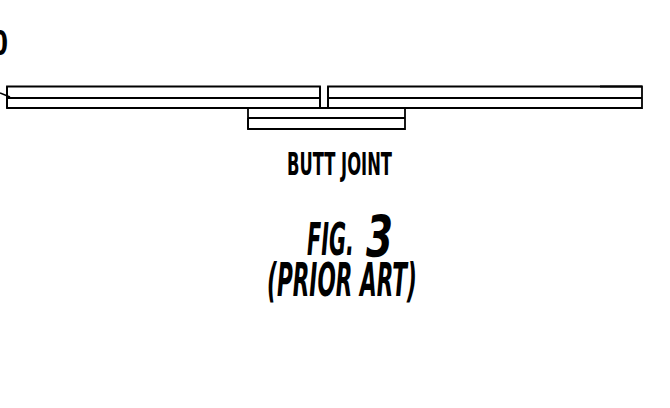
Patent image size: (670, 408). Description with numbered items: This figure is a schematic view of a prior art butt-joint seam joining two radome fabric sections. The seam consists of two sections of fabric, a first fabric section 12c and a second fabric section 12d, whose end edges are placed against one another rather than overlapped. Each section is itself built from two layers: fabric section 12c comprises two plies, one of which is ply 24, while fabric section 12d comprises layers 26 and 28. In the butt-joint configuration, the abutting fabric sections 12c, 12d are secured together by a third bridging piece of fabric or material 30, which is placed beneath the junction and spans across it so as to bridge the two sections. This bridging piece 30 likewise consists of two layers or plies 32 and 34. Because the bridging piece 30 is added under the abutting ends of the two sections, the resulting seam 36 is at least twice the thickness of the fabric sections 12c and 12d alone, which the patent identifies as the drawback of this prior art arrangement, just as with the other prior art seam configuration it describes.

The fabric section 12c is at (173, 86).
The fabric section 12d is at (465, 86).
The ply of section 12c 24 is at (20, 108).
The layer of section 12d 26 is at (643, 86).
The layer of section 12d 28 is at (642, 110).
The bridging piece of fabric or material 30 is at (262, 130).
The layer or ply of bridging piece 32 is at (247, 113).
The layer or ply of bridging piece 34 is at (245, 119).
The seam 36 is at (400, 78).